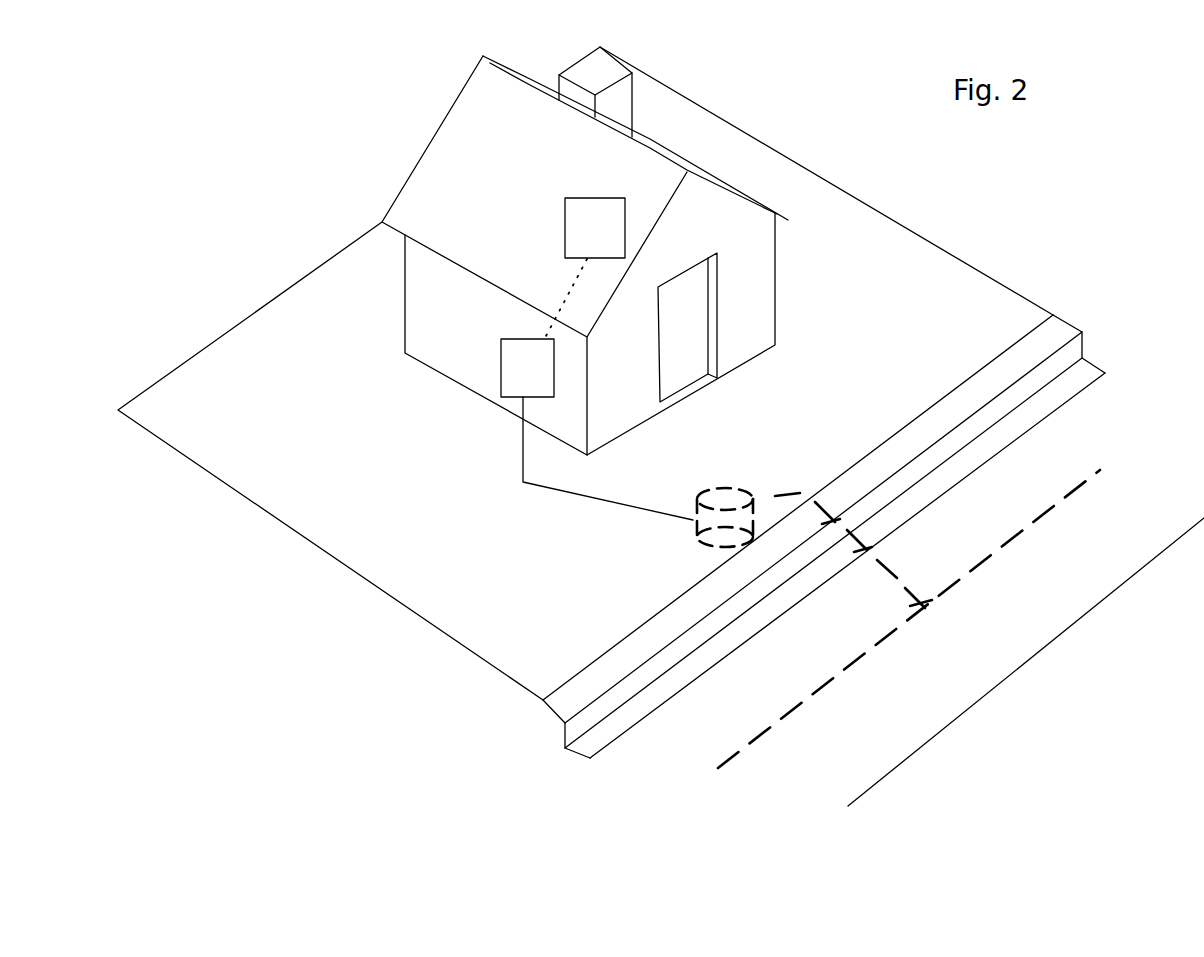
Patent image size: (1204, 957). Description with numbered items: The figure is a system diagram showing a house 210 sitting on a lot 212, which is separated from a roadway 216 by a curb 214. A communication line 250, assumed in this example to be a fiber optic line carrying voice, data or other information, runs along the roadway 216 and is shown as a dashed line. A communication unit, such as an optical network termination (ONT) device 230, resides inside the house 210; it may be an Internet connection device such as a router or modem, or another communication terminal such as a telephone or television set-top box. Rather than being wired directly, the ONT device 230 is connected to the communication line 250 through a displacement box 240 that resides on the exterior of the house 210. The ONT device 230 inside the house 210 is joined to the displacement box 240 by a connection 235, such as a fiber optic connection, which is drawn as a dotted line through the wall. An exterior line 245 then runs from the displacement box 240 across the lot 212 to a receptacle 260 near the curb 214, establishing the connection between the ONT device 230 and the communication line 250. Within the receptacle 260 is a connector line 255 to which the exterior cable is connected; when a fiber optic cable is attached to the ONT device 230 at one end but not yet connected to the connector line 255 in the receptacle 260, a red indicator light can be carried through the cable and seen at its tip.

The house 210 is at (777, 308).
The lot 212 is at (958, 295).
The curb 214 is at (1065, 323).
The roadway 216 is at (1032, 622).
The optical network termination (ONT) device 230 is at (595, 228).
The connection 235 is at (563, 298).
The displacement box 240 is at (527, 368).
The exterior line 245 is at (568, 493).
The communication line 250 is at (1067, 500).
The connector line 255 is at (888, 562).
The receptacle 260 is at (753, 485).